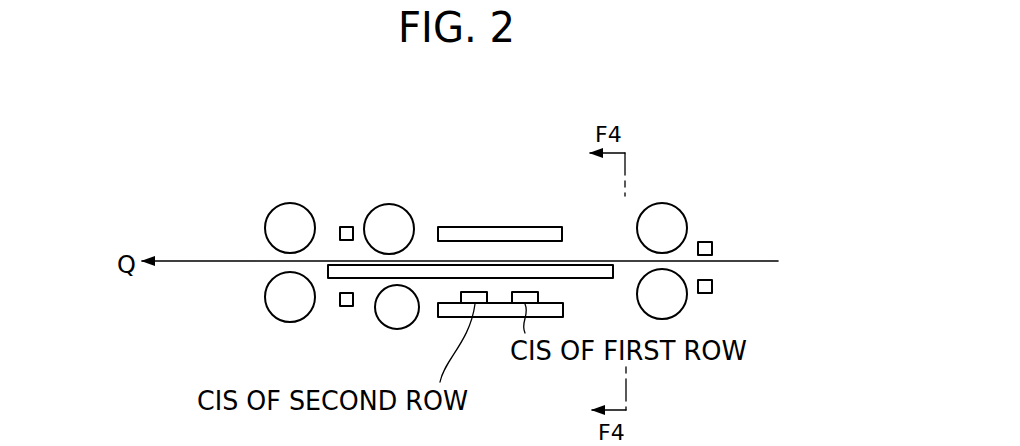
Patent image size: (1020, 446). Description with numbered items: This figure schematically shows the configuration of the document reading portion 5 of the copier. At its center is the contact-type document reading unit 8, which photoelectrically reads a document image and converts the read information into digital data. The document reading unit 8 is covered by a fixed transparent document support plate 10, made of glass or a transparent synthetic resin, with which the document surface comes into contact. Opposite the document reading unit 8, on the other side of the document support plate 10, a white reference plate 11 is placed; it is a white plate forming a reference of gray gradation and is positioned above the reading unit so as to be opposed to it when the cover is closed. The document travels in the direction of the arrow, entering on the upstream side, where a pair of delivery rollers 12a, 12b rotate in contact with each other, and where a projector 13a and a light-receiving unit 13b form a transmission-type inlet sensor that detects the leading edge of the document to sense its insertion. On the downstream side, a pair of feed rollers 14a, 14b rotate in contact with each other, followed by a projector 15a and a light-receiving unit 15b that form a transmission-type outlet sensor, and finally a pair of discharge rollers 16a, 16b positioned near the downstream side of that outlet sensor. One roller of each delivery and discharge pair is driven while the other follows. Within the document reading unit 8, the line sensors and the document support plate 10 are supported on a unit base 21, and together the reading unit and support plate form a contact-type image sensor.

The document reading portion 5 is at (546, 184).
The document reading unit 8 is at (497, 320).
The document support plate 10 is at (580, 271).
The white reference plate 11 is at (498, 233).
The delivery roller 12a is at (673, 306).
The delivery roller 12b is at (665, 212).
The projector 13a is at (712, 286).
The light-receiving unit 13b is at (705, 242).
The feed roller 14a is at (398, 318).
The feed roller 14b is at (389, 212).
The projector 15a is at (344, 307).
The light-receiving unit 15b is at (345, 226).
The discharge roller 16a is at (277, 297).
The discharge roller 16b is at (277, 224).
The unit base 21 is at (564, 310).